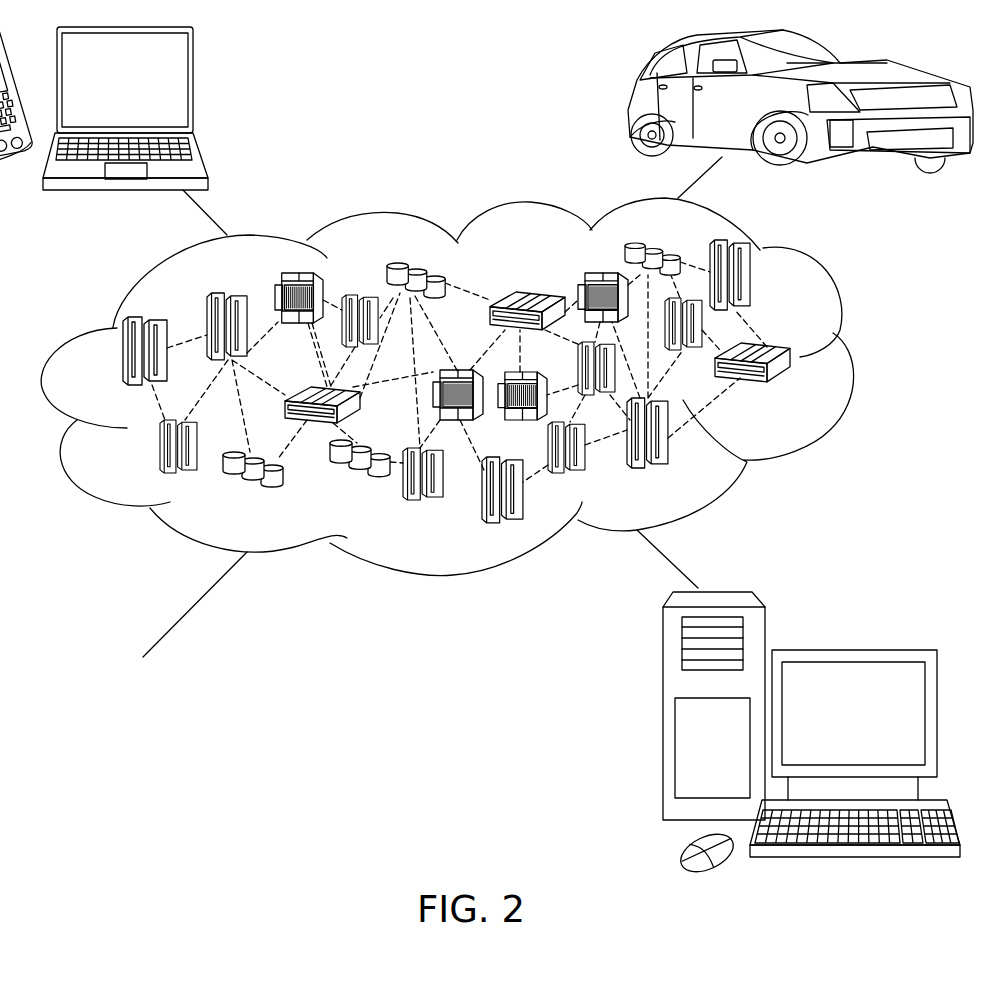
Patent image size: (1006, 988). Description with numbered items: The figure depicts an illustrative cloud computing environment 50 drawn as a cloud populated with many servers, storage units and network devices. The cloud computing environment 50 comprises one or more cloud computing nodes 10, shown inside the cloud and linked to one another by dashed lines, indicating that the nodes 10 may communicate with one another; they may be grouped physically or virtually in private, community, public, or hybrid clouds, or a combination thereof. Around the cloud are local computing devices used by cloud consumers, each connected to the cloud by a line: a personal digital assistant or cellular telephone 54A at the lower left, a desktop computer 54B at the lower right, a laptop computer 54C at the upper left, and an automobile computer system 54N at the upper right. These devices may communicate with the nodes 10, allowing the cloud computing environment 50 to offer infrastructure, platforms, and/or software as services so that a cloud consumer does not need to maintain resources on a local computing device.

The cloud computing node 10 is at (803, 394).
The cloud computing environment 50 is at (475, 387).
The personal digital assistant or cellular telephone 54A is at (182, 743).
The desktop computer 54B is at (850, 650).
The laptop computer 54C is at (193, 86).
The automobile computer system 54N is at (630, 100).